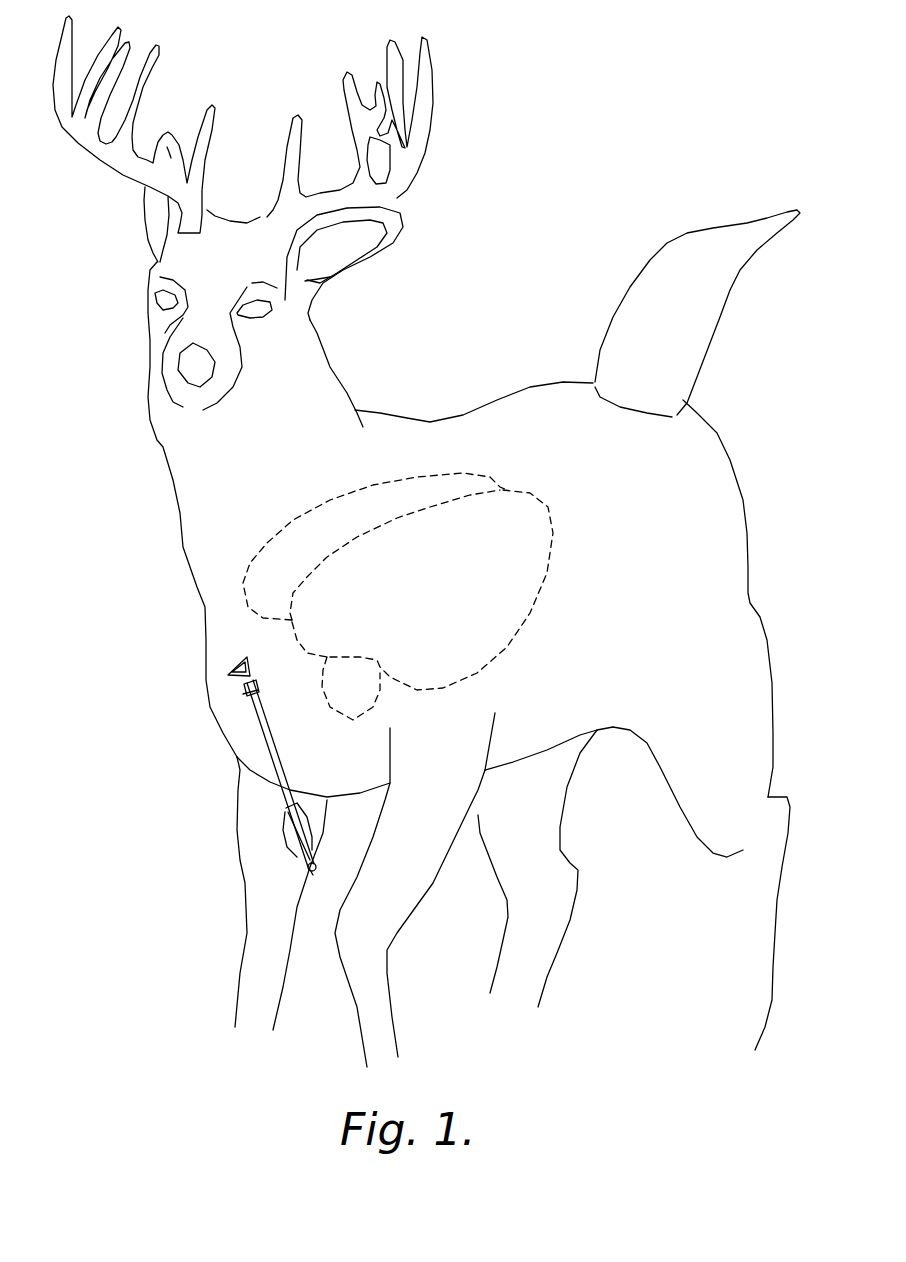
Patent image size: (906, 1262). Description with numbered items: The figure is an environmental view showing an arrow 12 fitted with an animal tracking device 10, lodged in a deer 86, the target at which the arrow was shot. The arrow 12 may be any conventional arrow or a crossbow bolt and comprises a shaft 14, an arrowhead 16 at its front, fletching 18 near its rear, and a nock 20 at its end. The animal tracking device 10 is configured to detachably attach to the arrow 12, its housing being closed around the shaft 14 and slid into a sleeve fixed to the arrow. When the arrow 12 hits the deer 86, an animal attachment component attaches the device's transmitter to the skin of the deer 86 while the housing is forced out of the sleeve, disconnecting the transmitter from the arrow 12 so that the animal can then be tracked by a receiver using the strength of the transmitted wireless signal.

The deer 86 is at (540, 383).
The animal tracking device 10 is at (280, 755).
The arrow 12 is at (277, 750).
The shaft 14 is at (260, 730).
The arrowhead 16 is at (235, 667).
The fletching 18 is at (290, 843).
The nock 20 is at (313, 867).